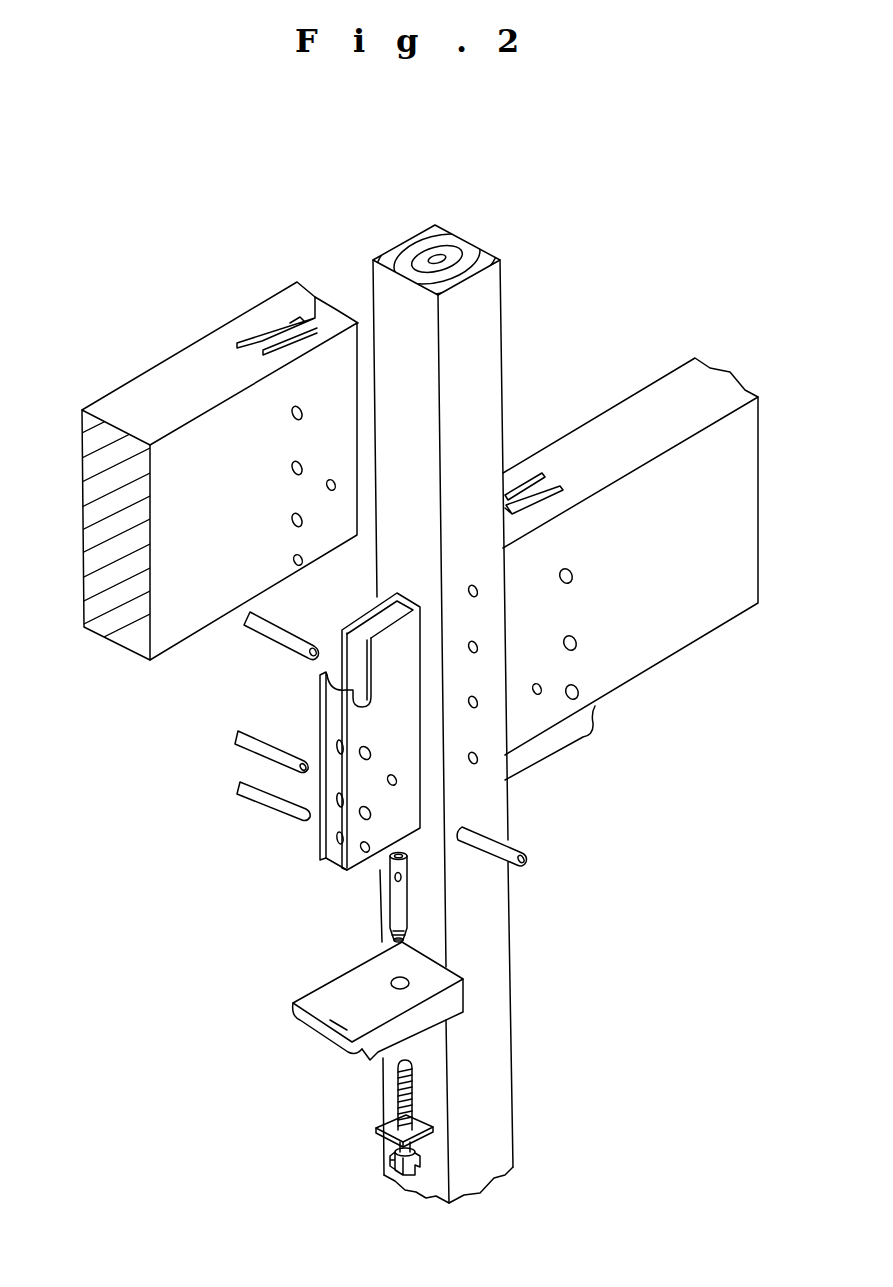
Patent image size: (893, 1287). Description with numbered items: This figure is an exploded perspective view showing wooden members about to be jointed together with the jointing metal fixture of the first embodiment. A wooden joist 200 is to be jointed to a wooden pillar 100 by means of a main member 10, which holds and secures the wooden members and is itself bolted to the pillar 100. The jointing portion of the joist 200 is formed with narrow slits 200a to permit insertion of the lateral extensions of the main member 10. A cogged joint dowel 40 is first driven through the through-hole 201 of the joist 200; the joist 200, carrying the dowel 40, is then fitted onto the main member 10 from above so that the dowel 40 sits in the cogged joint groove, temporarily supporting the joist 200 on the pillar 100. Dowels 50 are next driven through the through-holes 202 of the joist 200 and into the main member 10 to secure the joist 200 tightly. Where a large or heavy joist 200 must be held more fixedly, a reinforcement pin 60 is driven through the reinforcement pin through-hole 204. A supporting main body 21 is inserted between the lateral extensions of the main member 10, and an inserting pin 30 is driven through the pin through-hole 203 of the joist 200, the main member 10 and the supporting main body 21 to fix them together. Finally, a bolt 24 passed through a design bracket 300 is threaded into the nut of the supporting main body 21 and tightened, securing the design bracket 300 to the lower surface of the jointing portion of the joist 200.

The pillar 100 is at (480, 310).
The joist 200 is at (150, 372).
The narrow slits 200a is at (273, 325).
The through-hole 201 is at (301, 406).
The through-holes 202 is at (211, 367).
The pin through-hole 203 is at (335, 485).
The reinforcement pin through-hole 204 is at (159, 617).
The main member 10 is at (321, 868).
The supporting main body 21 is at (403, 907).
The bolt 24 is at (400, 1103).
The inserting pin 30 is at (512, 852).
The cogged joint dowel 40 is at (265, 640).
The dowels 50 is at (258, 748).
The reinforcement pin 60 is at (280, 813).
The design bracket 300 is at (307, 997).